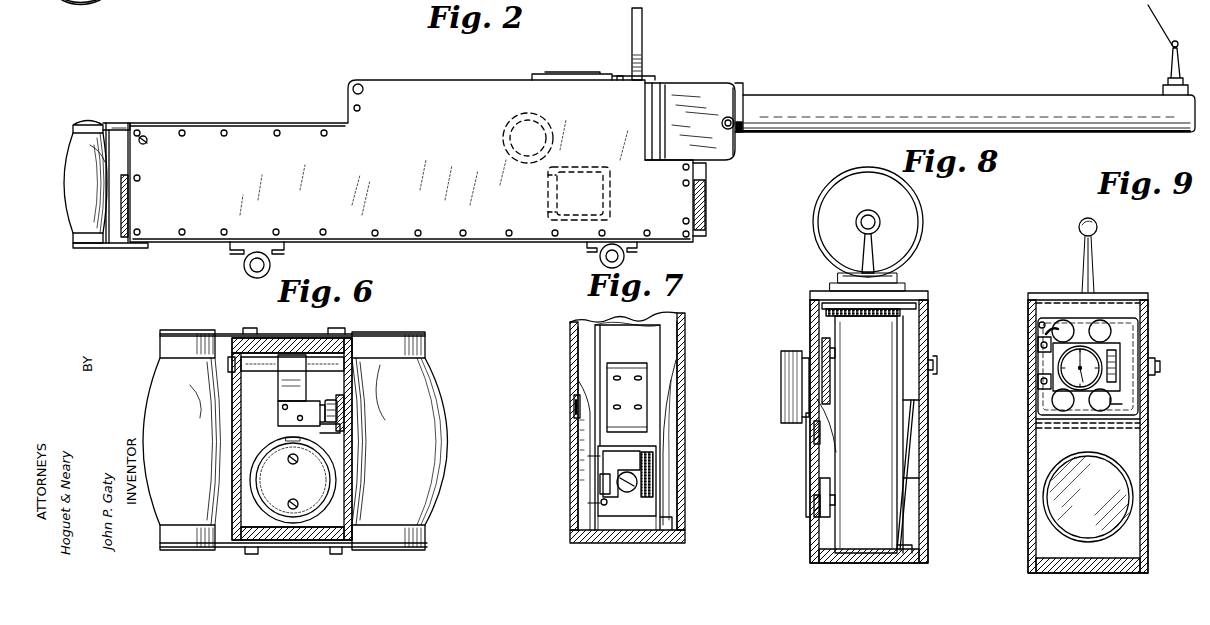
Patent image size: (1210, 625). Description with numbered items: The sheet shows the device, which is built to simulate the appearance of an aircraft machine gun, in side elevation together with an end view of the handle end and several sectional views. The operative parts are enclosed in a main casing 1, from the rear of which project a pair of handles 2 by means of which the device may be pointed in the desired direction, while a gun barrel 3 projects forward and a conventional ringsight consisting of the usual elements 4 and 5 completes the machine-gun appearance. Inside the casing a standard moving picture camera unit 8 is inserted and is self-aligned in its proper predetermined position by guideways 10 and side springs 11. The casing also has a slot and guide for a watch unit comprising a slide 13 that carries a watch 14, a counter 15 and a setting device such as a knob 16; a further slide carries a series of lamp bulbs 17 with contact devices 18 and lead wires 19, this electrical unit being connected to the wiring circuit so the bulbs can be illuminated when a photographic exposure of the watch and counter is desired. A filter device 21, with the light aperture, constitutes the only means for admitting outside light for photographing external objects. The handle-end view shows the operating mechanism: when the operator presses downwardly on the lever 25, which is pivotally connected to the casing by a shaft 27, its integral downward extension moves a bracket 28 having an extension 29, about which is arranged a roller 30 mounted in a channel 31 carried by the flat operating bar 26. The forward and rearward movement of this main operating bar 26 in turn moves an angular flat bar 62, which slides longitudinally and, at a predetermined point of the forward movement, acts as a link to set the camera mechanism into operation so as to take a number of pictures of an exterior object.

In FIG. 2, the main casing 1 is at (428, 88).
In FIG. 2, the handles 2 is at (70, 198).
In FIG. 2, the gun barrel 3 is at (853, 100).
In FIG. 2, the ringsight element 4 is at (642, 25).
In FIG. 8, the ringsight element 4 is at (912, 208).
In FIG. 8, the ringsight element 5 is at (882, 222).
In FIG. 9, the ringsight element 5 is at (1100, 227).
In FIG. 8, the moving picture camera unit 8 is at (866, 434).
In FIG. 7, the guideways 10 is at (580, 440).
In FIG. 7, the side springs 11 is at (668, 462).
In FIG. 9, the slide 13 is at (1108, 310).
In FIG. 9, the watch 14 is at (1090, 360).
In FIG. 9, the counter 15 is at (1113, 370).
In FIG. 9, the knob 16 is at (1158, 368).
In FIG. 9, the lamp bulbs 17 is at (1140, 400).
In FIG. 9, the contact devices 18 is at (1038, 350).
In FIG. 9, the lead wires 19 is at (1048, 334).
In FIG. 9, the filter device 21 is at (1060, 510).
In FIG. 6, the lever 25 is at (299, 383).
In FIG. 7, the operating bar 26 is at (572, 405).
In FIG. 8, the operating bar 26 is at (812, 430).
In FIG. 6, the shaft 27 is at (333, 365).
In FIG. 6, the bracket 28 is at (283, 416).
In FIG. 6, the extension 29 is at (347, 405).
In FIG. 6, the roller 30 is at (345, 425).
In FIG. 6, the channel 31 is at (340, 395).
In FIG. 8, the angular flat bar 62 is at (815, 518).